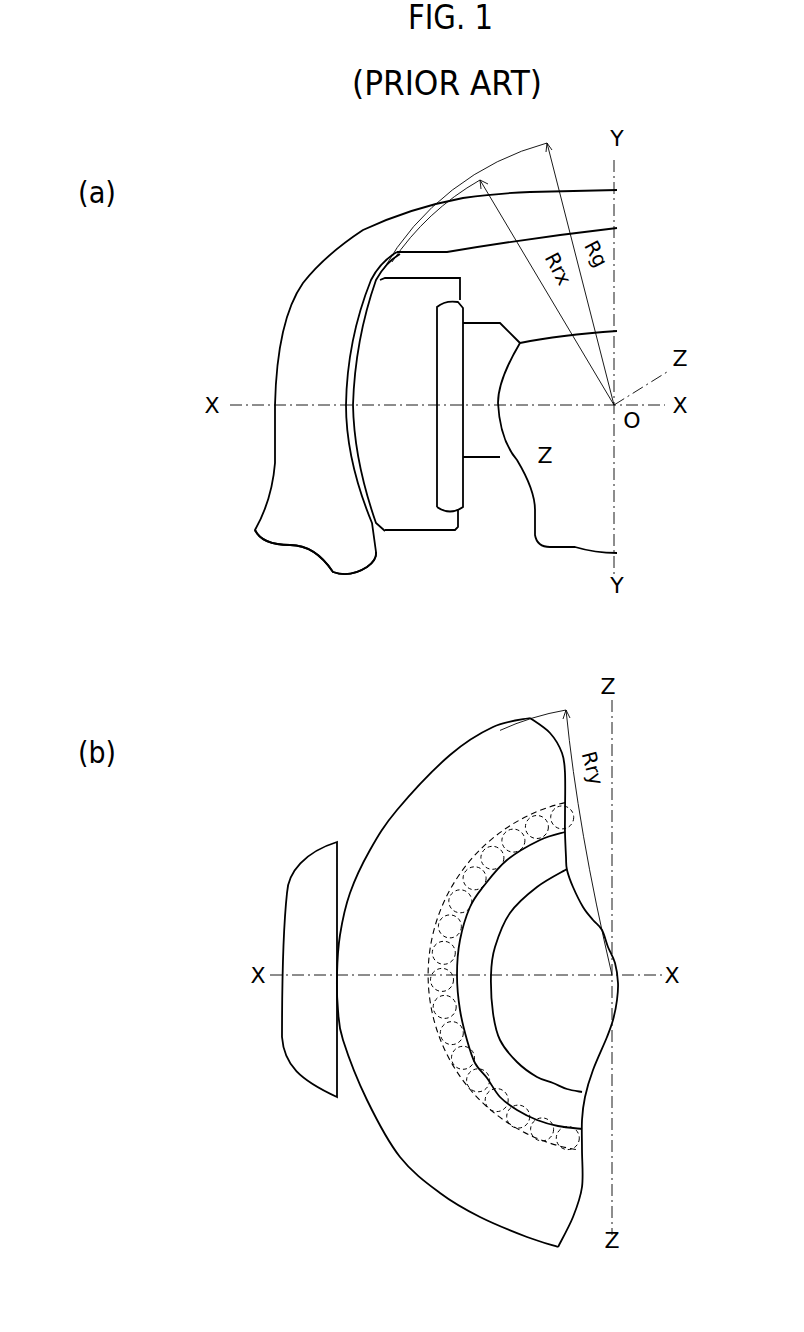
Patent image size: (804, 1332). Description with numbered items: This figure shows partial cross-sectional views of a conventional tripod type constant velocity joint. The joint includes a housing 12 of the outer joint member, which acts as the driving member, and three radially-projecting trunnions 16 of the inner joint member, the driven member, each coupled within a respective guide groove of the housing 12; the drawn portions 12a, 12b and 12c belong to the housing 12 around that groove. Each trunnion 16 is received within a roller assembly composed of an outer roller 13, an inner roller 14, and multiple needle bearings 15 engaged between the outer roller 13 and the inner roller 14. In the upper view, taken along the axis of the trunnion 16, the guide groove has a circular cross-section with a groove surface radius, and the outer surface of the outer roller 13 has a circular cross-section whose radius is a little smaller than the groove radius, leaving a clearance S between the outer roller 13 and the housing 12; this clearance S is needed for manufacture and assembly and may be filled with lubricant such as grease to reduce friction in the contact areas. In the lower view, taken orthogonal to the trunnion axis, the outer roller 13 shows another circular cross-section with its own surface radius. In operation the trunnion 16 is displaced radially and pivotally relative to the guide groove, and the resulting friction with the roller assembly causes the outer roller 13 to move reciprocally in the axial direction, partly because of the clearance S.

The housing 12 is at (305, 350).
The bead seat 12a is at (443, 253).
The rim flange 12b is at (360, 548).
The rim side surface 12c is at (358, 317).
The outer roller 13 is at (407, 523).
The inner roller 14 is at (483, 440).
The needle bearings 15 is at (450, 497).
The trunnion 16 is at (568, 500).
The clearance S is at (352, 458).